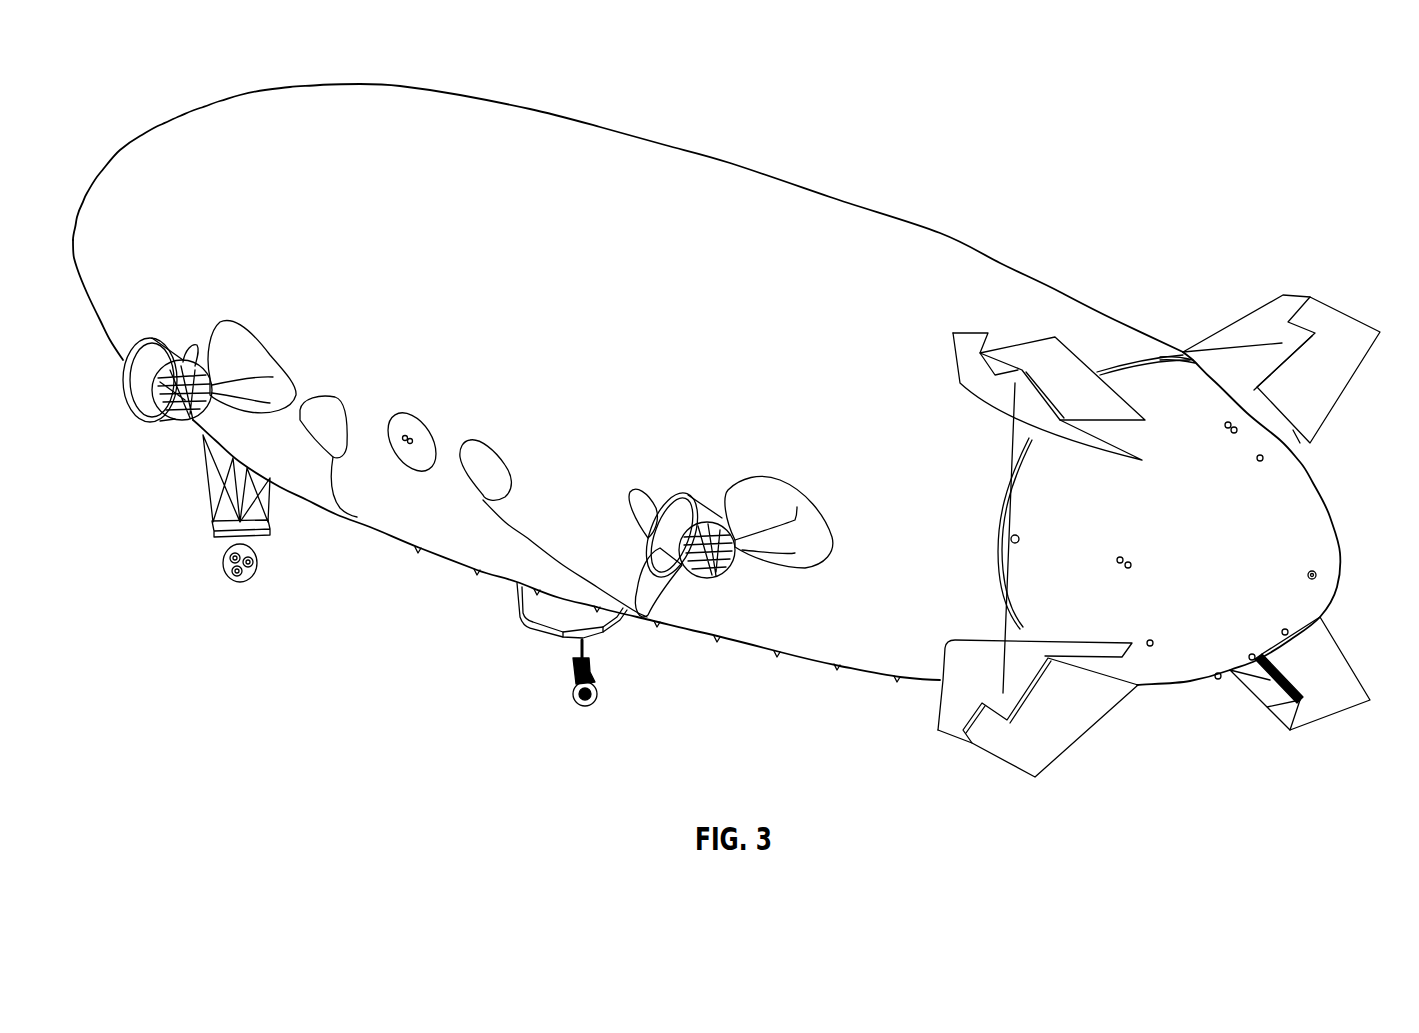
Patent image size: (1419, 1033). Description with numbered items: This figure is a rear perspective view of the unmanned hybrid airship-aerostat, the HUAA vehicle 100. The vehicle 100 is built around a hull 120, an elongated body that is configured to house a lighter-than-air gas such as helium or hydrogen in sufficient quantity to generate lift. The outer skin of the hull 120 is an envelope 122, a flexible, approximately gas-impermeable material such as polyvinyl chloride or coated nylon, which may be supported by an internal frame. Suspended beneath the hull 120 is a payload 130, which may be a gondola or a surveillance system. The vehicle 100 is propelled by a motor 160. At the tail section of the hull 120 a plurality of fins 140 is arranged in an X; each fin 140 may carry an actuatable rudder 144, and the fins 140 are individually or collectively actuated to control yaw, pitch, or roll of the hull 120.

The HUAA vehicle 100 is at (1150, 90).
The hull 120 is at (474, 92).
The envelope 122 is at (714, 201).
The payload 130 is at (240, 583).
The fin 140 is at (1078, 357).
The rudder 144 is at (1037, 373).
The motor 160 is at (127, 375).